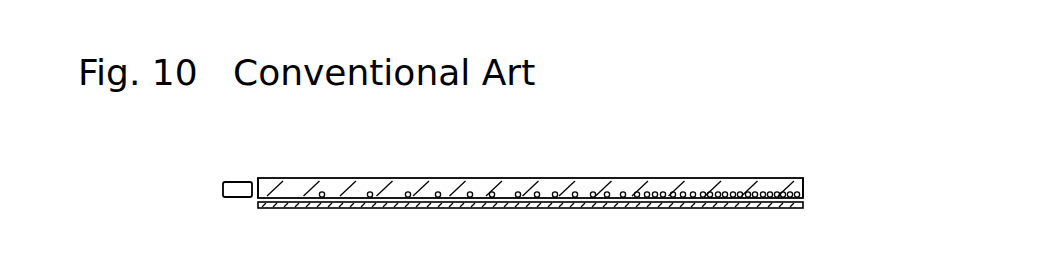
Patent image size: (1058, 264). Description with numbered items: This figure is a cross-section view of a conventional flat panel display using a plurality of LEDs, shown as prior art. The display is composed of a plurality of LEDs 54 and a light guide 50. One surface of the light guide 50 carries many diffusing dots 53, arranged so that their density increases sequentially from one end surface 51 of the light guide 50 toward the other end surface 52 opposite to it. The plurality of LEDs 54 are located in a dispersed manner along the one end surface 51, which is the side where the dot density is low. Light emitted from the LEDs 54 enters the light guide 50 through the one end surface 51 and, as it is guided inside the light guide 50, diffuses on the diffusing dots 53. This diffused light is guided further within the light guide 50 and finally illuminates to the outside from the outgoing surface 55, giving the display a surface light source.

The light guide 50 is at (672, 178).
The one end surface 51 is at (270, 183).
The other end surface 52 is at (805, 182).
The diffusing dots 53 is at (803, 197).
The LEDs 54 is at (238, 181).
The outgoing surface 55 is at (405, 180).